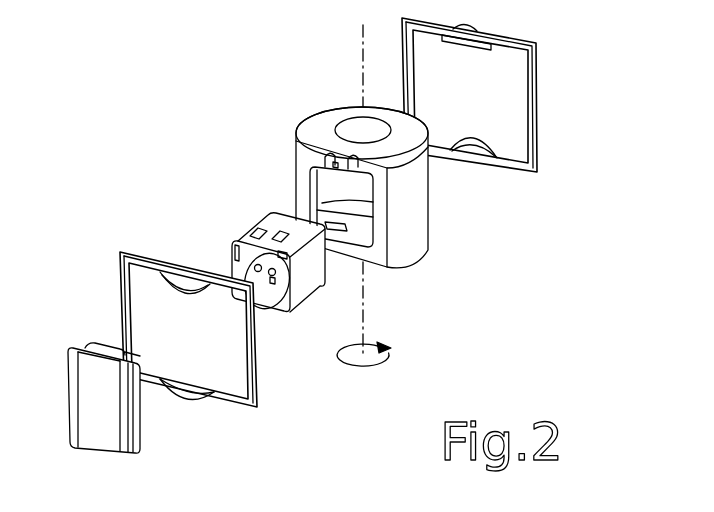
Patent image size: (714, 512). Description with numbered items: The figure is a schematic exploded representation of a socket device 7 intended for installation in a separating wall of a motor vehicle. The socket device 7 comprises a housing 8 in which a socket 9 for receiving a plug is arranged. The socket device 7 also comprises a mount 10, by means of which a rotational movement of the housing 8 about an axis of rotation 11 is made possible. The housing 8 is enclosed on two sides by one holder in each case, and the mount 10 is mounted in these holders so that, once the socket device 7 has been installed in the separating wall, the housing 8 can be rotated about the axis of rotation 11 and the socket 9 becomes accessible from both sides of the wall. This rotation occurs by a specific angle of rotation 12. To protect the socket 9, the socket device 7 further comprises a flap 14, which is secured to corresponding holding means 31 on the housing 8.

The socket device 7 is at (178, 155).
The housing 8 is at (296, 195).
The socket 9 is at (245, 228).
The mount 10 is at (357, 118).
The axis of rotation 11 is at (366, 310).
The angle of rotation 12 is at (364, 370).
The flap 14 is at (128, 427).
The holding means 31 is at (320, 165).